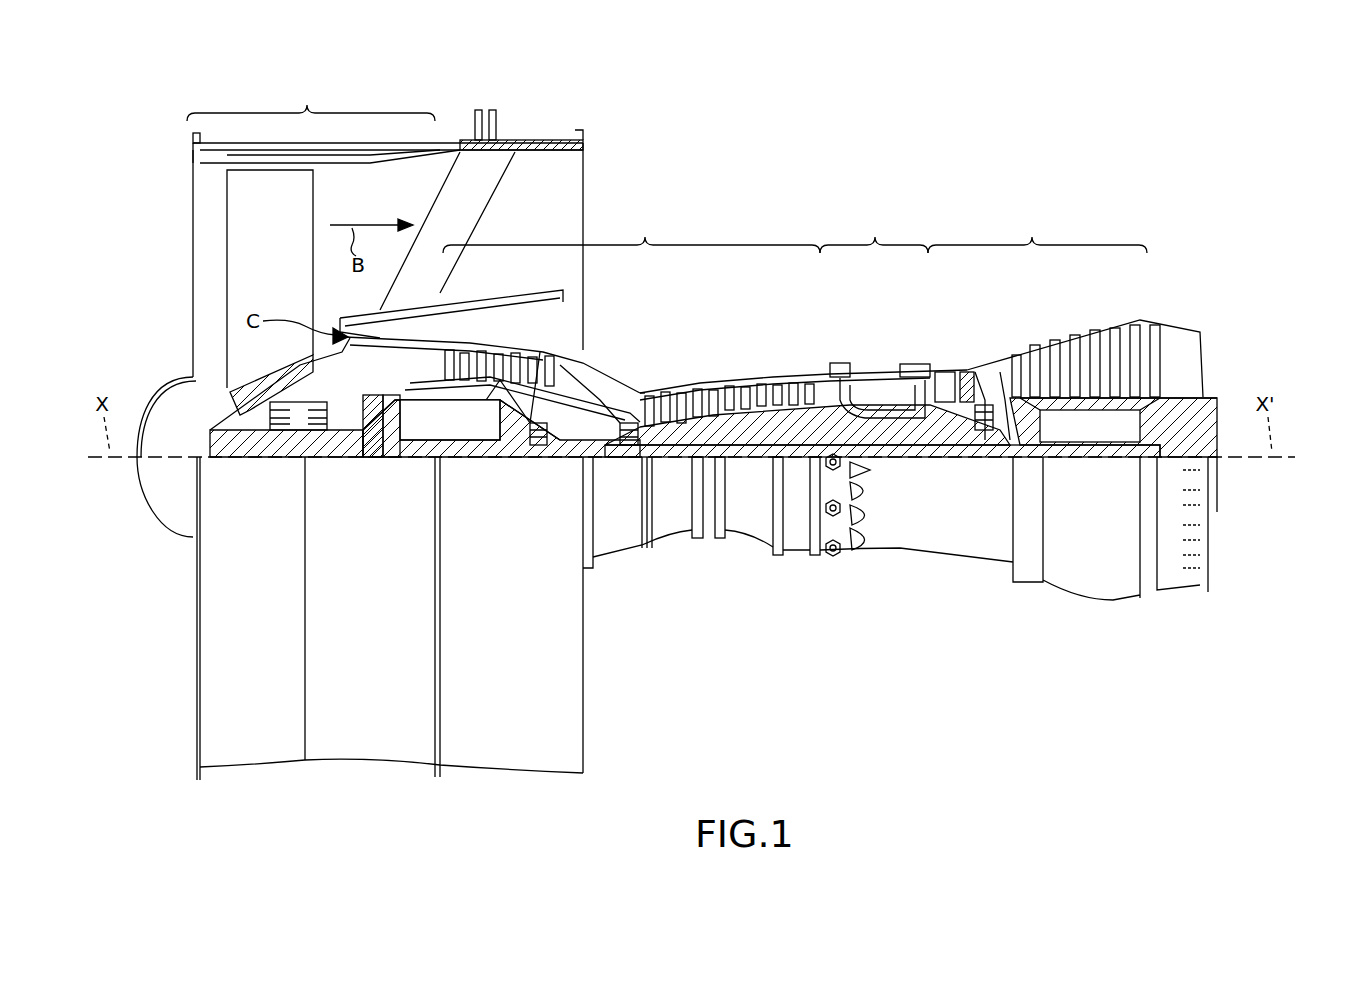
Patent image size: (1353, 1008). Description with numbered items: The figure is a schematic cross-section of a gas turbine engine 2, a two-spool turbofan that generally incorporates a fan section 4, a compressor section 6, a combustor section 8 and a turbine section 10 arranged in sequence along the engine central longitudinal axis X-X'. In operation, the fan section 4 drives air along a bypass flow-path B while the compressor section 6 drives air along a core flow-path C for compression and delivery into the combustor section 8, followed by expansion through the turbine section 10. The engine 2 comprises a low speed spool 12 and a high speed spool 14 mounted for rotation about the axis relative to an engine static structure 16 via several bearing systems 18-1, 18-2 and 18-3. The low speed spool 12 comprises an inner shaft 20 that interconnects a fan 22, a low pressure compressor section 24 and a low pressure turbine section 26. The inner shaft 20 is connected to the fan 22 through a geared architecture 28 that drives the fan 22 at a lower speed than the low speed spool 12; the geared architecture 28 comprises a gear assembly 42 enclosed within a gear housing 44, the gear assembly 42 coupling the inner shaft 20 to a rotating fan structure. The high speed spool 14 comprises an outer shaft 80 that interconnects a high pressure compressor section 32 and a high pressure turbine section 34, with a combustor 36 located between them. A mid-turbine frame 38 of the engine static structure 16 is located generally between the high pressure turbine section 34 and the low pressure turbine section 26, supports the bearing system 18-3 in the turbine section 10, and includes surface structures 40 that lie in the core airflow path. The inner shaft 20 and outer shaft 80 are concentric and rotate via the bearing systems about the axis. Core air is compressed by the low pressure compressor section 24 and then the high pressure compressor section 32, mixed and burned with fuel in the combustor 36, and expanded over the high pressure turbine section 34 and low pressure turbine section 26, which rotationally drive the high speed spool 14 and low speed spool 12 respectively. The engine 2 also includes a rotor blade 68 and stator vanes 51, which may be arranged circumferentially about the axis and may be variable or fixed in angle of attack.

The gas turbine engine 2 is at (928, 177).
The fan section 4 is at (311, 99).
The compressor section 6 is at (631, 232).
The combustor section 8 is at (874, 232).
The turbine section 10 is at (1037, 232).
The low speed spool 12 is at (757, 475).
The high speed spool 14 is at (793, 425).
The engine static structure 16 is at (367, 743).
The bearing system 18-1 is at (267, 457).
The bearing system 18-2 is at (532, 458).
The bearing system 18-3 is at (990, 458).
The inner shaft 20 is at (605, 458).
The fan 22 is at (277, 268).
The low pressure compressor section 24 is at (520, 352).
The low pressure turbine section 26 is at (1076, 360).
The geared architecture 28 is at (397, 478).
The high pressure compressor section 32 is at (735, 422).
The high pressure turbine section 34 is at (945, 372).
The combustor 36 is at (870, 395).
The mid-turbine frame 38 is at (985, 380).
The surface structures 40 is at (1000, 375).
The gear assembly 42 is at (425, 450).
The gear housing 44 is at (405, 403).
The stator vane 51 is at (677, 396).
The rotor blade 68 is at (960, 380).
The outer shaft 80 is at (884, 460).